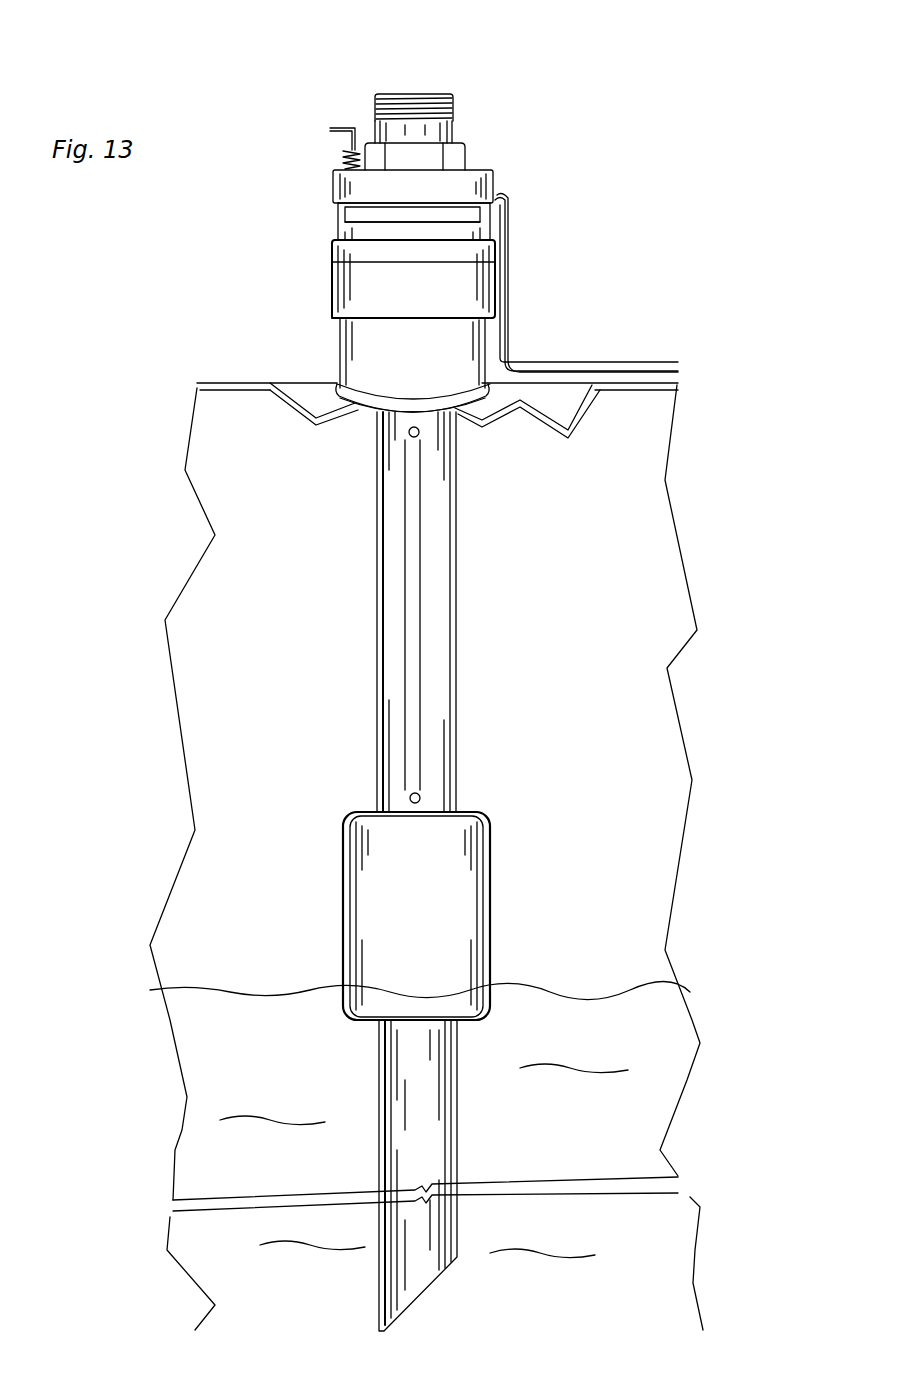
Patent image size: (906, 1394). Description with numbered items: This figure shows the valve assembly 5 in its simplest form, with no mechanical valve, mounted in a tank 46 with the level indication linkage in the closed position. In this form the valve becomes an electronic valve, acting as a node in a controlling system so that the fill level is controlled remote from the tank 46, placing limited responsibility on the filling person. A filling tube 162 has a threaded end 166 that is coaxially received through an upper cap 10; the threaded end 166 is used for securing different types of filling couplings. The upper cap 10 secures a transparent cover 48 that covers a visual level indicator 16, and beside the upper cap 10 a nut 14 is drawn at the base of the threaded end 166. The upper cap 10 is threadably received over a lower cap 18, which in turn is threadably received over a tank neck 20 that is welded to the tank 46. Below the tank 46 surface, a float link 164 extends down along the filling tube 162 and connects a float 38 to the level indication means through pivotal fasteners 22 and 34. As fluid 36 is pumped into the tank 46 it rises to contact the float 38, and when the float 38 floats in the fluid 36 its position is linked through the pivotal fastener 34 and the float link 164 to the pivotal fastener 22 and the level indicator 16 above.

The valve assembly 5 is at (410, 185).
The threaded end 166 is at (412, 92).
The upper cap 10 is at (350, 157).
The nut 14 is at (465, 153).
The transparent cover 48 is at (337, 230).
The visual level indicator 16 is at (480, 210).
The lower cap 18 is at (493, 300).
The tank neck 20 is at (487, 355).
The pivotal fastener 22 is at (420, 427).
The tank 46 is at (275, 384).
The filling tube 162 is at (455, 476).
The float link 164 is at (422, 532).
The pivotal fastener 34 is at (420, 795).
The float 38 is at (343, 885).
The fluid 36 is at (225, 988).